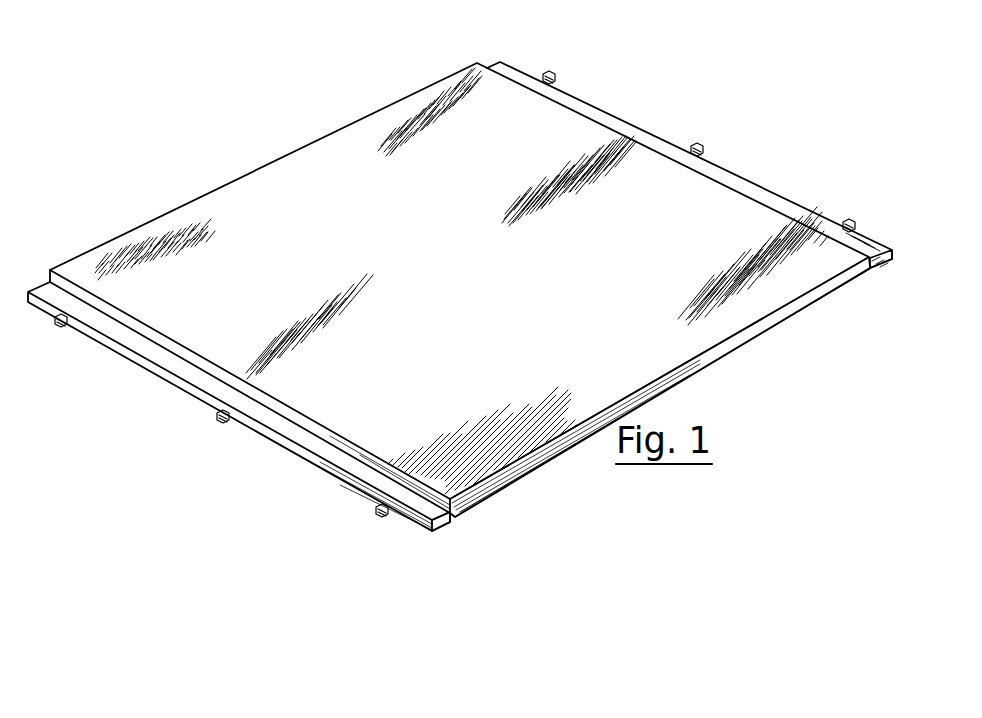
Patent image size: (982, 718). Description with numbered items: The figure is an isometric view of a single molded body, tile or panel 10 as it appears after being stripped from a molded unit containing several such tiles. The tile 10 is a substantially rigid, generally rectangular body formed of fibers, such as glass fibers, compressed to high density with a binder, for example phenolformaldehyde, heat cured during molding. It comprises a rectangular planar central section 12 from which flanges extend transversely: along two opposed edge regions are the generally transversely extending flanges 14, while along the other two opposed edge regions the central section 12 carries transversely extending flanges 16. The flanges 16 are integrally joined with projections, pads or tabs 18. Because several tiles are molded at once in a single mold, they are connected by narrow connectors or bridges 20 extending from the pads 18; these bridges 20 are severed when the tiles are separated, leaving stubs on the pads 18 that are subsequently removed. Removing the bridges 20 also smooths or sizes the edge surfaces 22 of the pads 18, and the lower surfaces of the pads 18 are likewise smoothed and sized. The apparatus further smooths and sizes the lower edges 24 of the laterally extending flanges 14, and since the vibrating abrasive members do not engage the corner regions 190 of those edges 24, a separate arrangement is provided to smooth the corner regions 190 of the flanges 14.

The tile 10 is at (466, 62).
The central section 12 is at (475, 258).
The flanges 14 is at (787, 306).
The flanges 16 is at (882, 248).
The pads 18 is at (636, 107).
The bridges 20 is at (560, 60).
The edge surfaces 22 is at (891, 258).
The lower edges 24 is at (731, 347).
The corner regions 190 is at (866, 268).